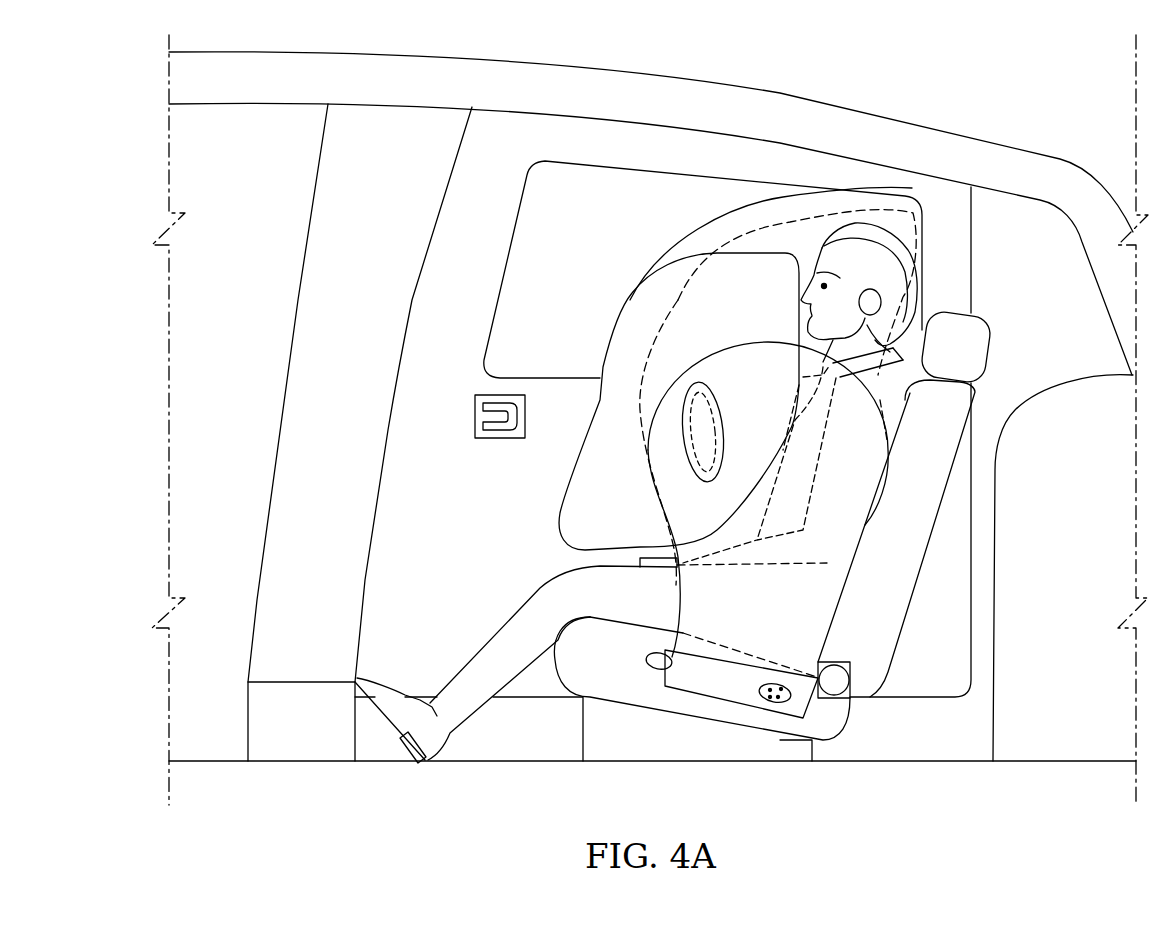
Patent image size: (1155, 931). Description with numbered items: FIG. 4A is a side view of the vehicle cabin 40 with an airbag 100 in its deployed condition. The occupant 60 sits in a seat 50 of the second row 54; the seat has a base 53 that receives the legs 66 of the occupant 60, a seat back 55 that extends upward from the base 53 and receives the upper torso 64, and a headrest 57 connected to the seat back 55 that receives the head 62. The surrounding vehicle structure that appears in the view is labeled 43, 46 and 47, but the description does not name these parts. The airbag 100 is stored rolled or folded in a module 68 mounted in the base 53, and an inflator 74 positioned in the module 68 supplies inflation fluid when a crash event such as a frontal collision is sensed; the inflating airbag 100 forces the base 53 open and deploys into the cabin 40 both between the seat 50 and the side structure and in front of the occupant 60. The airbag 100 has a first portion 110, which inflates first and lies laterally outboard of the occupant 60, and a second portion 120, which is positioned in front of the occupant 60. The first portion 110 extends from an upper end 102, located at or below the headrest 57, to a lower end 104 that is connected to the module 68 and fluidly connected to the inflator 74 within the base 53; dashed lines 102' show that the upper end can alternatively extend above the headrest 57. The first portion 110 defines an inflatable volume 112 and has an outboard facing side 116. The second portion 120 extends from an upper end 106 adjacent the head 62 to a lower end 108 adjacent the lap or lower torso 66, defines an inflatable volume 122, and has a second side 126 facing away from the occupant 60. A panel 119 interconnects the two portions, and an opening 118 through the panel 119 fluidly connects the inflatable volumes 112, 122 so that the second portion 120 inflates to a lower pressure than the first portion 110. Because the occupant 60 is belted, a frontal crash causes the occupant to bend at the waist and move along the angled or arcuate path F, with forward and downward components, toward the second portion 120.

The cabin 40 is at (407, 158).
The pillar 43 is at (440, 272).
The front door 46 is at (370, 350).
The rear door 47 is at (1088, 355).
The seat 50 is at (778, 748).
The base 53 is at (818, 725).
The second row 54 is at (741, 770).
The seat back 55 is at (925, 495).
The headrest 57 is at (983, 345).
The occupant 60 is at (894, 352).
The head 62 is at (918, 305).
The upper torso 64 is at (879, 395).
The legs 66 is at (583, 587).
The module 68 is at (643, 665).
The inflator 74 is at (715, 678).
The airbag 100 is at (643, 260).
The upper end 102 is at (965, 442).
The upper end extended above headrest 102' is at (771, 243).
The lower end 104 is at (750, 686).
The upper end 106 is at (734, 232).
The lower end 108 is at (518, 514).
The first portion 110 is at (705, 608).
The inflatable volume 112 is at (836, 553).
The outboard facing side 116 is at (860, 429).
The opening 118 is at (707, 388).
The panel 119 is at (683, 473).
The second portion 120 is at (593, 492).
The inflatable volume 122 is at (650, 338).
The second side 126 is at (603, 368).
The arrow F is at (780, 240).